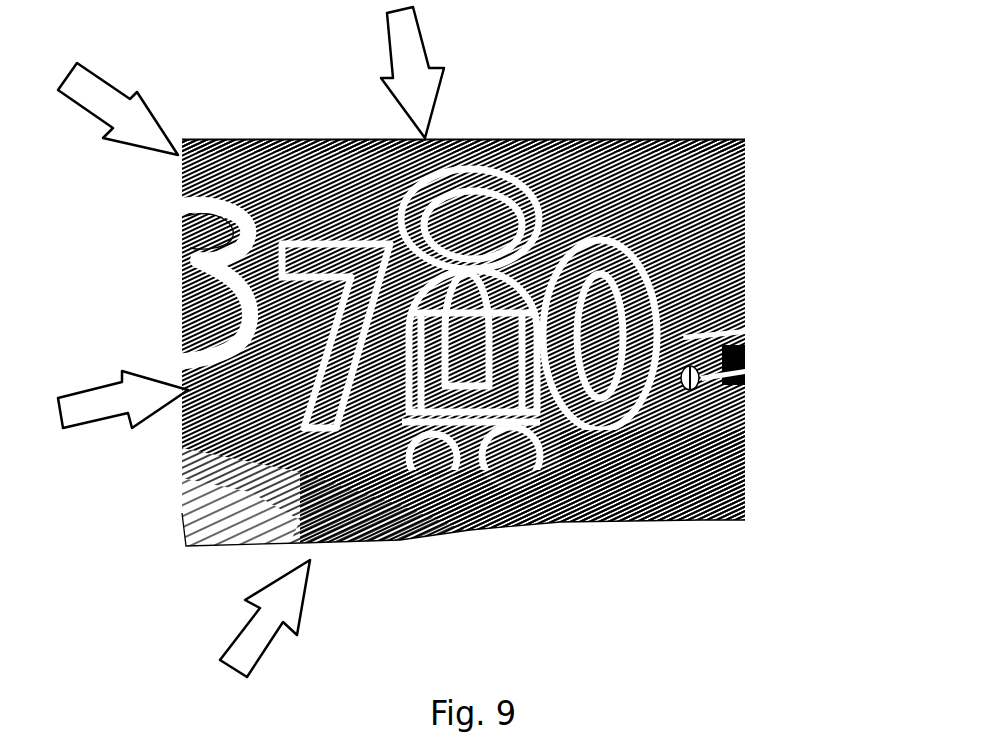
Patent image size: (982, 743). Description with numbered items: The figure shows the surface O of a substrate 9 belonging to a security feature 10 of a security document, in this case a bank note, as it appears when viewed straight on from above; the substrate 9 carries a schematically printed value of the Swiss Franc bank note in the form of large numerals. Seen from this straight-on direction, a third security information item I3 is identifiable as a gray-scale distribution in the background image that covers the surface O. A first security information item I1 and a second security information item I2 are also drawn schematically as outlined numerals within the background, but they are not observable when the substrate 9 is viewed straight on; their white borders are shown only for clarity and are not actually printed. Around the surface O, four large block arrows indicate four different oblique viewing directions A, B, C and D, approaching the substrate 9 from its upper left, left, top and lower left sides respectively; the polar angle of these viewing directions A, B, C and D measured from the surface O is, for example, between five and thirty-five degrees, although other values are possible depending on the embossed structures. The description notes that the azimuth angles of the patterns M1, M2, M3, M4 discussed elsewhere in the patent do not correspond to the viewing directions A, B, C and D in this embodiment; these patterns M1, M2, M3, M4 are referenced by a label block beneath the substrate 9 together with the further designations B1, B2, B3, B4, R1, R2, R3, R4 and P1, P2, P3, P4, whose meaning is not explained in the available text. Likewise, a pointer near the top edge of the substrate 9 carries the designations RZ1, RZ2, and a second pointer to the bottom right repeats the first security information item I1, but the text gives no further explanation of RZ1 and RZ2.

The security feature 10 is at (762, 187).
The substrate 9 is at (683, 523).
The substrate surface O is at (683, 523).
The reading zone 1 RZ1 is at (463, 98).
The reading zone 2 RZ2 is at (504, 117).
The first security information item I1 is at (538, 402).
The second security information item I2 is at (538, 402).
The third security information item I3 is at (602, 117).
The pattern M1 is at (425, 572).
The pattern M2 is at (425, 572).
The pattern M3 is at (425, 572).
The pattern M4 is at (425, 572).
The region 1 B1 is at (425, 572).
The region 2 B2 is at (425, 572).
The region 3 B3 is at (425, 572).
The region 4 B4 is at (425, 572).
The row 1 R1 is at (425, 572).
The row 2 R2 is at (425, 572).
The row 3 R3 is at (425, 572).
The row 4 R4 is at (425, 572).
The position 1 P1 is at (425, 572).
The position 2 P2 is at (425, 572).
The position 3 P3 is at (425, 572).
The position 4 P4 is at (477, 550).
The oblique viewing direction A is at (255, 618).
The oblique viewing direction B is at (123, 394).
The oblique viewing direction C is at (118, 100).
The oblique viewing direction D is at (415, 69).